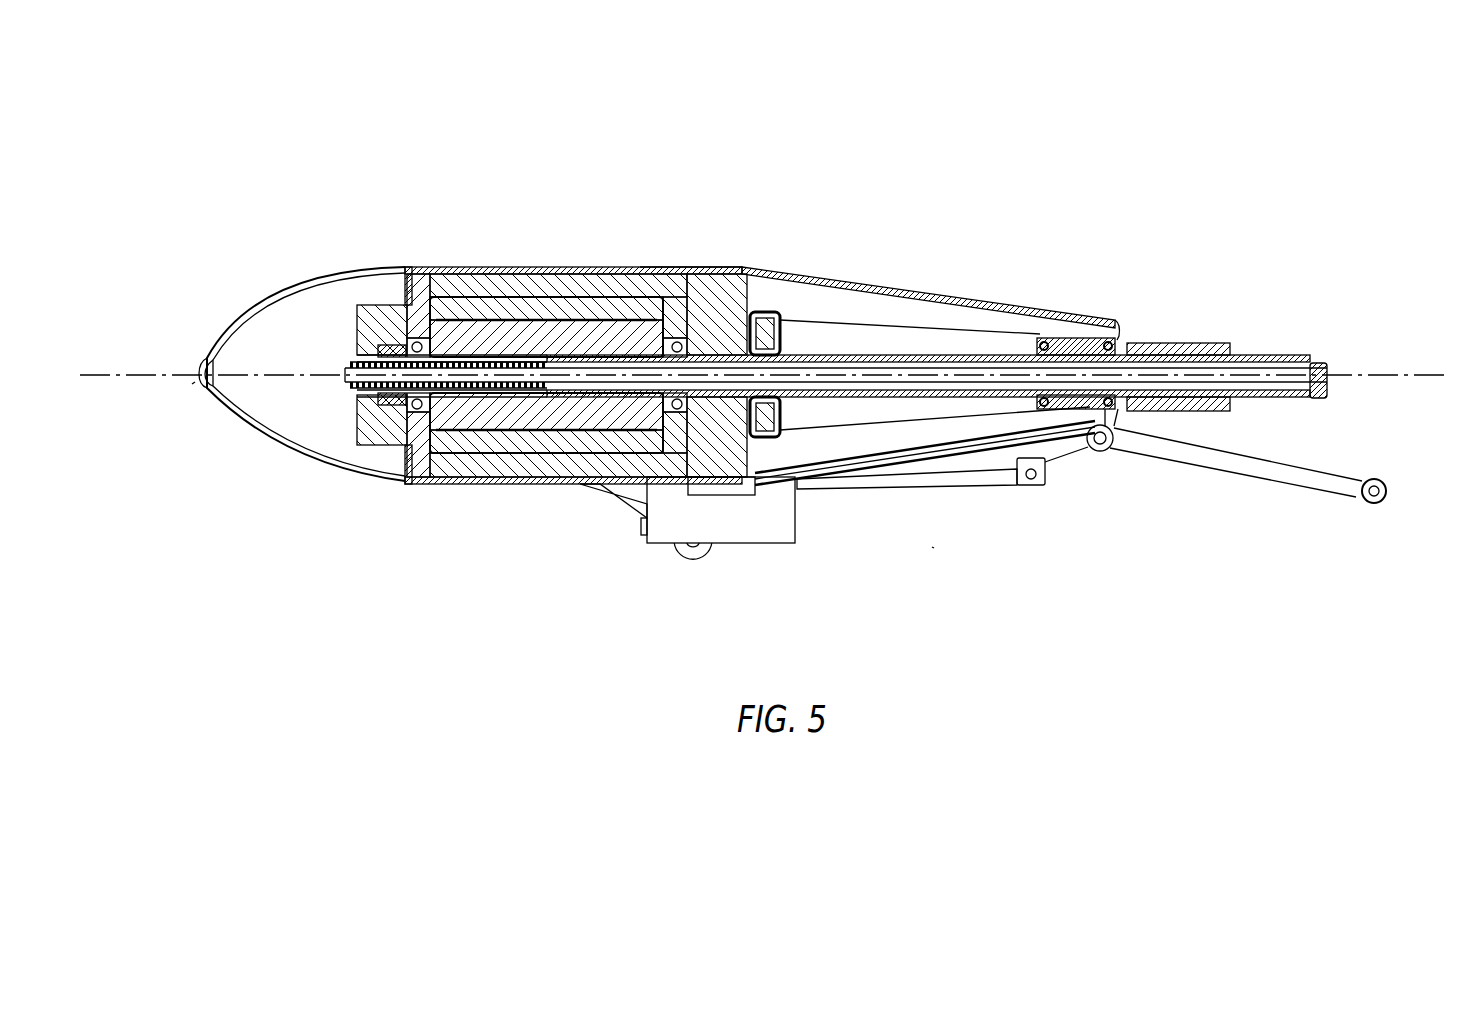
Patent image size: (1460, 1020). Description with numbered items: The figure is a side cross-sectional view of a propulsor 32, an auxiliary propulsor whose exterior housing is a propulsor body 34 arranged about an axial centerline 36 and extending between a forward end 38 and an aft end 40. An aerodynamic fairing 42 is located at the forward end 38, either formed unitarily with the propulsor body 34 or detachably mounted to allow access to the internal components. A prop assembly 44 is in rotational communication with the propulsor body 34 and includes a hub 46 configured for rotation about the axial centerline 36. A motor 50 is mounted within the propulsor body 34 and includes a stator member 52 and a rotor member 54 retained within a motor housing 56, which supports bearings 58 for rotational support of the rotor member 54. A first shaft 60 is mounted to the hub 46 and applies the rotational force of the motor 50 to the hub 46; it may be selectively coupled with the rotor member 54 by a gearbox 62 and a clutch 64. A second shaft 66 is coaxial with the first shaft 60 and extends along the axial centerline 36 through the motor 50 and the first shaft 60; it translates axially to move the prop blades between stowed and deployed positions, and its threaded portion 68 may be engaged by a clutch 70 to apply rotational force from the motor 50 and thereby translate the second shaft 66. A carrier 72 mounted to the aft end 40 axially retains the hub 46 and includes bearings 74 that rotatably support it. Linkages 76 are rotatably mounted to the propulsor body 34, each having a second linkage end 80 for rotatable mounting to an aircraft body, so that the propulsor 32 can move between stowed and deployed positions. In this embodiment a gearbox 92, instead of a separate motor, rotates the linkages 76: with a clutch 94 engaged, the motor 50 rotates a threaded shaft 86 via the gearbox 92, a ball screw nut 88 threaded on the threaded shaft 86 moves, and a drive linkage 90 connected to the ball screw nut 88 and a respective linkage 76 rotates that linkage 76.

The propulsor 32 is at (934, 548).
The propulsor body 34 is at (585, 267).
The axial centerline 36 is at (1432, 370).
The forward end 38 is at (193, 383).
The aft end 40 is at (1130, 335).
The aerodynamic fairing 42 is at (305, 312).
The prop assembly 44 is at (1250, 343).
The hub 46 is at (1182, 345).
The motor 50 is at (669, 270).
The stator member 52 is at (480, 300).
The rotor member 54 is at (540, 335).
The motor housing 56 is at (418, 297).
The bearings 58 is at (671, 346).
The first shaft 60 is at (882, 352).
The gearbox 62 is at (725, 292).
The clutch 64 is at (785, 325).
The second shaft 66 is at (832, 376).
The threaded portion 68 is at (530, 400).
The clutch 70 is at (378, 447).
The carrier 72 is at (1080, 338).
The bearings 74 is at (1045, 338).
The linkages 76 is at (630, 507).
The second linkage end 80 is at (697, 562).
The threaded shaft 86 is at (876, 470).
The ball screw nut 88 is at (1044, 486).
The drive linkage 90 is at (990, 472).
The gearbox 92 is at (768, 543).
The clutch 94 is at (722, 495).